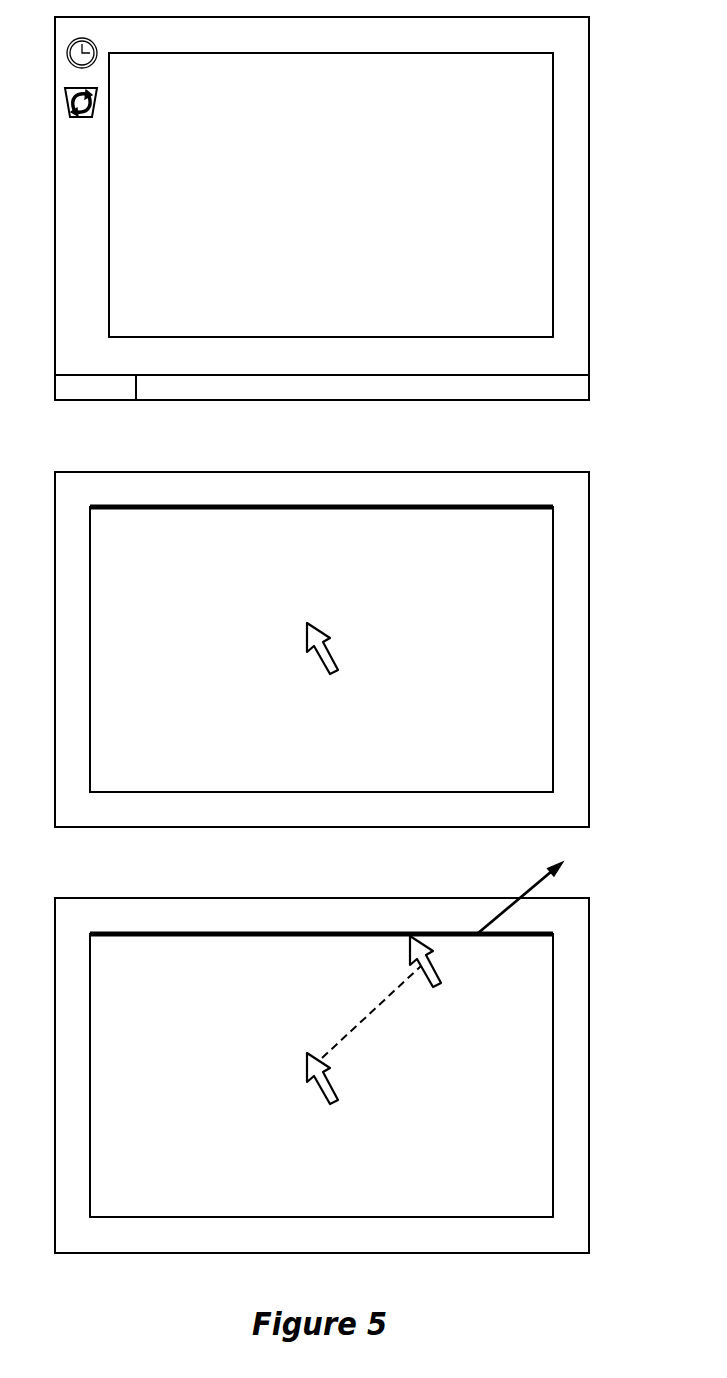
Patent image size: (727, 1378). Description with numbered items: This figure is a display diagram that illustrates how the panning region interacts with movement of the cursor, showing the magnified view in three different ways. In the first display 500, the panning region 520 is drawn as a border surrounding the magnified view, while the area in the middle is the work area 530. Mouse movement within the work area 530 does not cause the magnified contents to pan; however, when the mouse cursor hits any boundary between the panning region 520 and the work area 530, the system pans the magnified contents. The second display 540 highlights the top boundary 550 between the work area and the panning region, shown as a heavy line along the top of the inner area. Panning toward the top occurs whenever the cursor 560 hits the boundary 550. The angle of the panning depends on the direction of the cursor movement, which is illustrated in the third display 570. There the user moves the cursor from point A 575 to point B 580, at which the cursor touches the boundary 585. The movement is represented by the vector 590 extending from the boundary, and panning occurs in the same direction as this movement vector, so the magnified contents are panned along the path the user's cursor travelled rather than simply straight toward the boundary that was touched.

The display screen 500 is at (322, 200).
The panning region 520 is at (393, 41).
The work area 530 is at (378, 196).
The display 540 is at (322, 639).
The top boundary 550 is at (553, 509).
The cursor 560 is at (328, 654).
The display 570 is at (322, 1066).
The point A 575 is at (348, 1117).
The point B 580 is at (437, 971).
The boundary 585 is at (553, 935).
The vector 590 is at (528, 888).